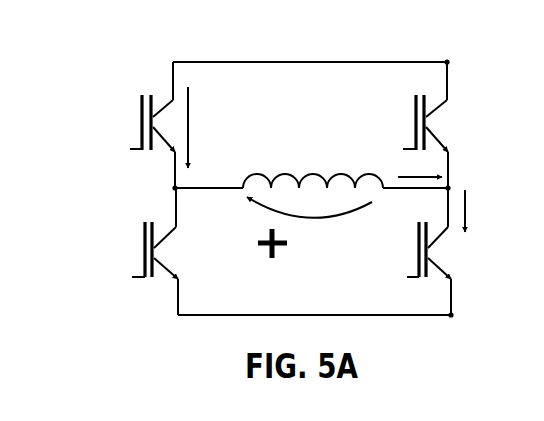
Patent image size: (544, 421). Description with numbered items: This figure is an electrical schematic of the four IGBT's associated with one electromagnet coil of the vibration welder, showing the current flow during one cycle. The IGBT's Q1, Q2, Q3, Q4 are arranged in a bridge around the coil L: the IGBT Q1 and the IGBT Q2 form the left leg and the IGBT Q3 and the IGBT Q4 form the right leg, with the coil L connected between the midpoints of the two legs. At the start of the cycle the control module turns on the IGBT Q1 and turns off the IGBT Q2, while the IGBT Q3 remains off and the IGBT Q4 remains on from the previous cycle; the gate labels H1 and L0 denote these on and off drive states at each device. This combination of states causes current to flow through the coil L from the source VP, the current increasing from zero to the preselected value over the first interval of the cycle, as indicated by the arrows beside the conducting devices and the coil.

The IGBT Q1 is at (150, 112).
The IGBT Q2 is at (143, 257).
The IGBT Q3 is at (459, 125).
The IGBT Q4 is at (462, 251).
The high gate drive signal H1 is at (255, 191).
The low gate drive signal L0 is at (253, 193).
The coil L is at (342, 154).
The source VP is at (309, 231).